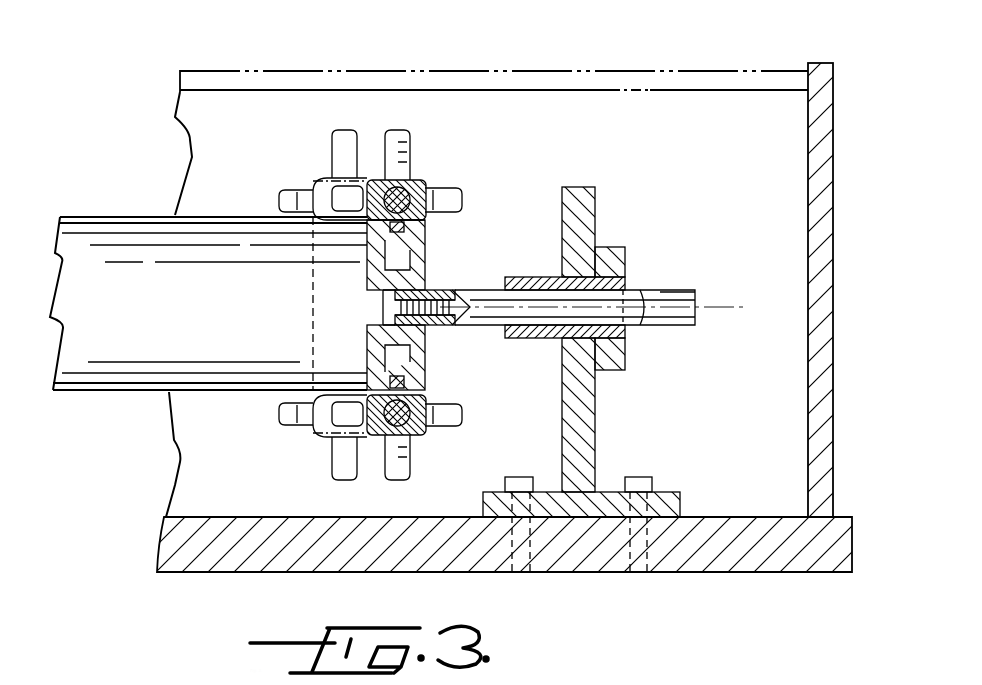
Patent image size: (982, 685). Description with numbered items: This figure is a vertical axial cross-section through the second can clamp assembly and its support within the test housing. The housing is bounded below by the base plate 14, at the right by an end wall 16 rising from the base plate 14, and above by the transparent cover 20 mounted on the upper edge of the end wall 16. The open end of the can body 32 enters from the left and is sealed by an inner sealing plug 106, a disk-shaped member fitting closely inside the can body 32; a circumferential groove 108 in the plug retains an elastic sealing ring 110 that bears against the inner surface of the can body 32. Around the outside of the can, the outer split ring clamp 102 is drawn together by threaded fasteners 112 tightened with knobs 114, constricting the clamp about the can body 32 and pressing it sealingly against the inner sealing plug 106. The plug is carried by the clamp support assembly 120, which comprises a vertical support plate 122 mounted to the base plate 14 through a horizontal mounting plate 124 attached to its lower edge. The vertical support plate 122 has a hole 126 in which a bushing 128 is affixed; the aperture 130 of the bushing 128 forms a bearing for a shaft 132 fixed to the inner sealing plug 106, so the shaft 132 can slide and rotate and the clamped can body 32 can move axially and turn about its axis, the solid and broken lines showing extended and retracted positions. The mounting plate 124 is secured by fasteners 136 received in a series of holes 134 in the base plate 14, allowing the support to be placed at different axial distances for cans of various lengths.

The base plate 14 is at (758, 563).
The end wall 16 is at (832, 92).
The transparent cover 20 is at (572, 72).
The can body 32 is at (120, 180).
The outer split ring clamp 102 is at (385, 197).
The inner sealing plug 106 is at (370, 265).
The circumferential groove 108 is at (397, 380).
The elastic sealing ring 110 is at (400, 228).
The threaded fasteners 112 is at (405, 190).
The knobs 114 is at (407, 147).
The clamp support assembly 120 is at (618, 217).
The vertical support plate 122 is at (593, 417).
The horizontal mounting plate 124 is at (668, 500).
The hole 126 is at (562, 337).
The bushing 128 is at (623, 252).
The aperture 130 is at (593, 323).
The shaft 132 is at (668, 325).
The holes 134 is at (530, 543).
The fasteners 136 is at (537, 483).